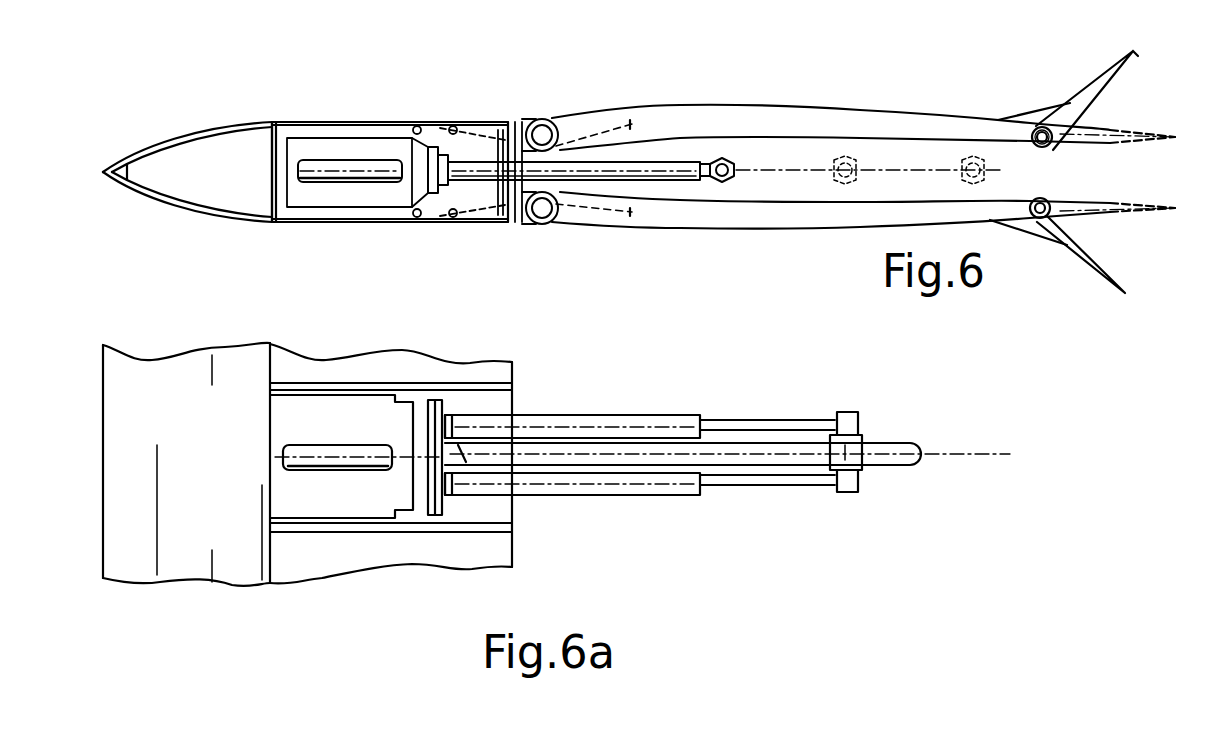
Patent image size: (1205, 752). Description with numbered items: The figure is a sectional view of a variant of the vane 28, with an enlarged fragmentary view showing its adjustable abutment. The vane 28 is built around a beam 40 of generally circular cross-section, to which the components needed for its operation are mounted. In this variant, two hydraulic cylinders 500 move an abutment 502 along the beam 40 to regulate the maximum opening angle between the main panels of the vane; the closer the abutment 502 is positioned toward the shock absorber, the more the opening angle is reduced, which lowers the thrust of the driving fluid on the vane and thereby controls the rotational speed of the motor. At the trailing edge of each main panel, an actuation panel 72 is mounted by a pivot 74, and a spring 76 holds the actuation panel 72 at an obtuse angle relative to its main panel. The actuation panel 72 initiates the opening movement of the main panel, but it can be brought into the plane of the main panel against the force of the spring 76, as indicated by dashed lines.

In FIG. 6, the vane 28 is at (445, 112).
In FIG. 6, the hydraulic cylinders 500 is at (653, 162).
In FIG. 6A, the hydraulic cylinders 500 is at (648, 420).
In FIG. 6, the abutment 502 is at (744, 168).
In FIG. 6A, the abutment 502 is at (857, 437).
In FIG. 6A, the beam 40 is at (795, 452).
In FIG. 6, the actuation panel 72 is at (1118, 70).
In FIG. 6, the pivot 74 is at (1050, 147).
In FIG. 6, the spring 76 is at (1027, 134).